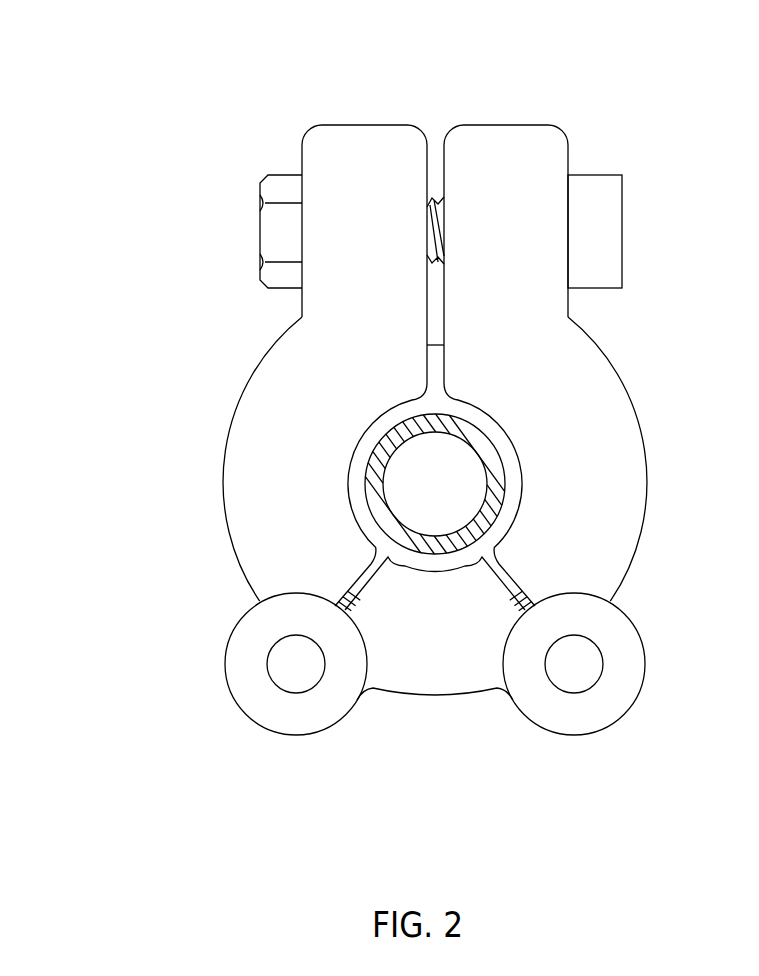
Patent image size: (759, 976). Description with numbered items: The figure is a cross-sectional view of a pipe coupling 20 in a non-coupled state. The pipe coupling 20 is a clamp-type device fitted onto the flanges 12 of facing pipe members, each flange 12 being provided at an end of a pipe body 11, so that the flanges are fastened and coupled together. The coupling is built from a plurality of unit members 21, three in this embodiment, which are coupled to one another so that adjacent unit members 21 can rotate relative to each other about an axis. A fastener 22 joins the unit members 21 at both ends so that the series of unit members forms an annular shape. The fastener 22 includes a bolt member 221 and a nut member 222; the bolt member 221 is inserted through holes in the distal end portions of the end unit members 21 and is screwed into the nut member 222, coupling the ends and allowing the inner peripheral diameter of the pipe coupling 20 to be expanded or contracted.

The pipe coupling 20 is at (127, 100).
The fastener 22 is at (632, 157).
The bolt member 221 is at (260, 232).
The nut member 222 is at (622, 233).
The flange 12 is at (436, 344).
The pipe body 11 is at (366, 482).
The unit member 21 is at (223, 482).